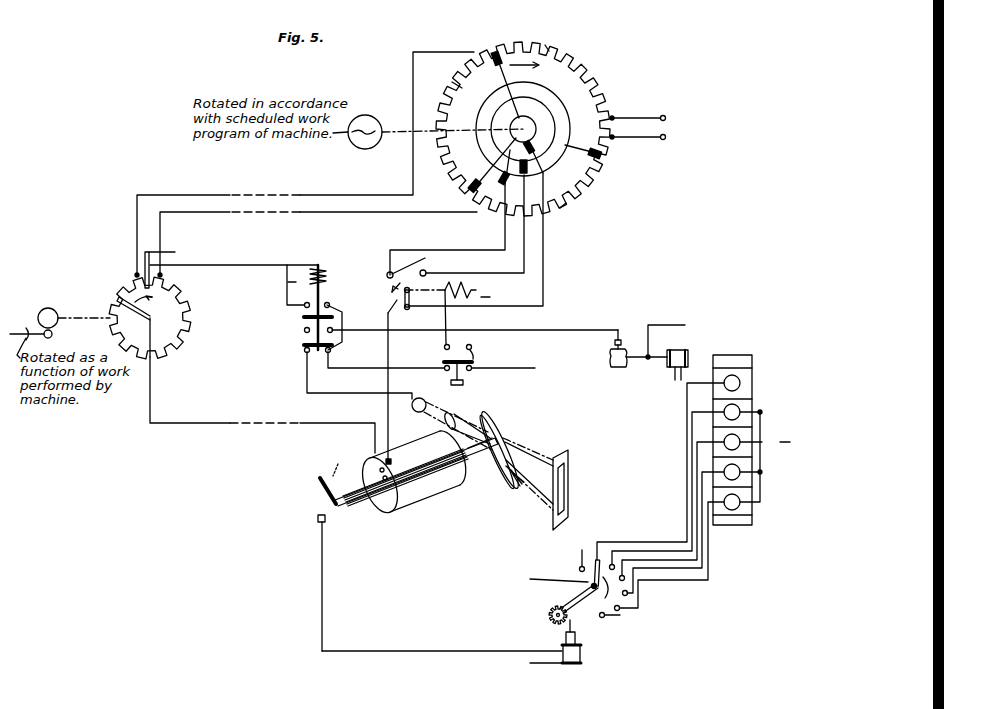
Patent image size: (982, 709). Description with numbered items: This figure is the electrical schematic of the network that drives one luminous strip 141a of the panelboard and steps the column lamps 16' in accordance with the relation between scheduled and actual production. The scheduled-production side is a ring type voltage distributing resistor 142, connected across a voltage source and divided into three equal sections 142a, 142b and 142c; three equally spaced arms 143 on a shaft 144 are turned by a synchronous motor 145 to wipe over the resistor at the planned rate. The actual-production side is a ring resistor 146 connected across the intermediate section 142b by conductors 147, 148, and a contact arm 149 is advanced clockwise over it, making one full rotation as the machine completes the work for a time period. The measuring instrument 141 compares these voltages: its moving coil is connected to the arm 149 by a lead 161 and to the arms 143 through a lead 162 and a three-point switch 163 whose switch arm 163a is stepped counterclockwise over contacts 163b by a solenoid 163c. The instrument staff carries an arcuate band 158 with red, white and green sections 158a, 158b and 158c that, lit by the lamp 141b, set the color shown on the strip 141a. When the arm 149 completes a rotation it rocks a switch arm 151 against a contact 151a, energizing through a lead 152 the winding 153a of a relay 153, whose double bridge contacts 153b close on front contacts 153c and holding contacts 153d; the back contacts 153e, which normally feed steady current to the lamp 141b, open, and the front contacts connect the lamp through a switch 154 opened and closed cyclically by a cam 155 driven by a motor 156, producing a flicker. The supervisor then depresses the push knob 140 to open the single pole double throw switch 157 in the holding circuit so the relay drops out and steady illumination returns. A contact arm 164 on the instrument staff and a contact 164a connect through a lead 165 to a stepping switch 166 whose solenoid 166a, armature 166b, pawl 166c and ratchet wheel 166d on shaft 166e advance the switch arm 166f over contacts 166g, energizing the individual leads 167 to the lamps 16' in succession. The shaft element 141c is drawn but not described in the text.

The ring type voltage distributing resistor 142 is at (586, 68).
The resistor section 142a is at (548, 45).
The intermediate resistor section 142b is at (452, 84).
The resistor section 142c is at (566, 204).
The rotating contact arms 143 is at (497, 78).
The shaft 144 is at (400, 130).
The synchronous motor 145 is at (368, 114).
The ring type voltage dividing resistor 146 is at (190, 334).
The conductor 147 is at (337, 195).
The conductor 148 is at (350, 216).
The contact arm 149 is at (146, 326).
The switch arm 151 is at (143, 264).
The contact 151a is at (152, 267).
The lead 152 is at (250, 263).
The relay 153 is at (316, 260).
The relay winding 153a is at (327, 275).
The double bridge contacts 153b is at (303, 317).
The front contacts 153c is at (305, 330).
The holding circuit contacts 153d is at (330, 301).
The back contacts 153e is at (304, 351).
The switch 154 is at (613, 342).
The cam 155 is at (620, 370).
The motor 156 is at (684, 346).
The single pole double throw switch 157 is at (445, 363).
The arcuately shaped band 158 is at (486, 463).
The band section 158a is at (486, 414).
The band section 158b is at (503, 438).
The band section 158c is at (514, 488).
The lead 161 is at (198, 420).
The lead 162 is at (388, 403).
The three-point switch 163 is at (405, 260).
The switch arm 163a is at (412, 311).
The contacts 163b is at (426, 264).
The solenoid 163c is at (478, 288).
The contact arm 164 is at (318, 482).
The contact 164a is at (317, 518).
The lead 165 is at (417, 635).
The stepping switch 166 is at (547, 598).
The solenoid 166a is at (581, 655).
The armature 166b is at (576, 640).
The pawl 166c is at (598, 609).
The ratchet wheel 166d is at (550, 618).
The shaft 166e is at (587, 588).
The switch arm 166f is at (579, 568).
The contacts 166g is at (625, 579).
The leads 167 is at (674, 540).
The lamps 16' is at (751, 440).
The push knob 140 is at (464, 382).
The measuring instrument 141 is at (425, 474).
The luminous strip 141a is at (570, 489).
The lamp 141b is at (427, 404).
The shaft 141c is at (430, 484).